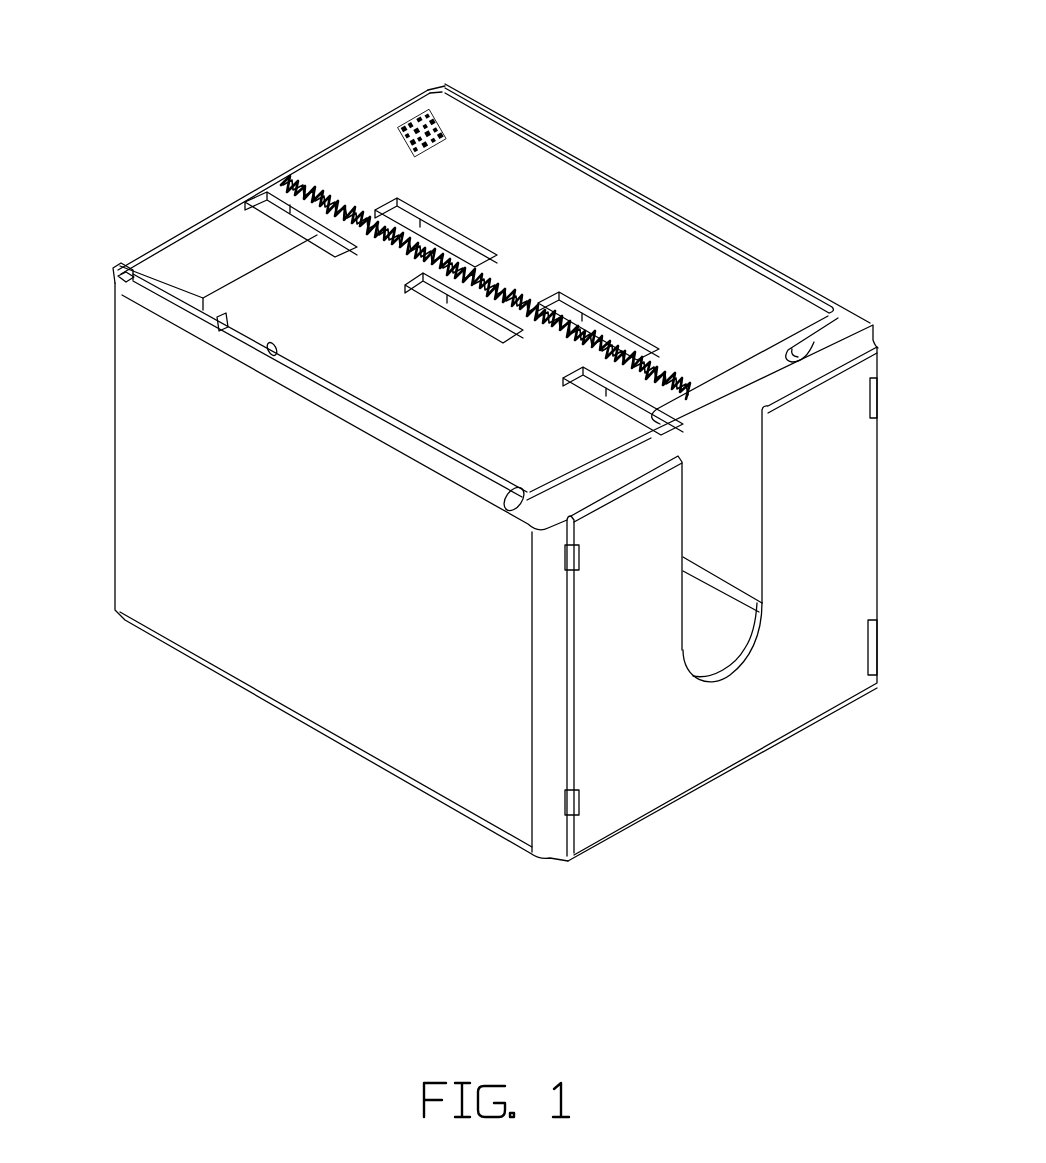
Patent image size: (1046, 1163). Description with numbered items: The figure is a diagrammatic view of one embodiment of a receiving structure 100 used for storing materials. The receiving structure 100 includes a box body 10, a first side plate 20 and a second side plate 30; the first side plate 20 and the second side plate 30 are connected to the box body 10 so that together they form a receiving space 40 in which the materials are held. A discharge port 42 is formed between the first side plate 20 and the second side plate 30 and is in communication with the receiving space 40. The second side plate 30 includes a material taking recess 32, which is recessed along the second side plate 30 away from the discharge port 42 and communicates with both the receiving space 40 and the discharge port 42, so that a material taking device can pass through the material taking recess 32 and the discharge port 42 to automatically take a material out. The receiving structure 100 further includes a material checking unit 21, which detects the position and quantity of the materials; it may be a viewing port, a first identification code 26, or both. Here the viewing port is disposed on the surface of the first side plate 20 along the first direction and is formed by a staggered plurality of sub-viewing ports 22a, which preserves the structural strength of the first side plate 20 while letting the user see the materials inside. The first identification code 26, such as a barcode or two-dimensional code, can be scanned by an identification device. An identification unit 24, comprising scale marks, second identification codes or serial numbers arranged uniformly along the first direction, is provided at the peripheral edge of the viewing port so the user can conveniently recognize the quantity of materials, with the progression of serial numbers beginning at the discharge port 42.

The receiving structure 100 is at (381, 27).
The box body 10 is at (140, 385).
The first side plate 20 is at (223, 240).
The material checking unit 21 is at (635, 114).
The sub-viewing ports 22a is at (598, 390).
The identification unit 24 is at (672, 388).
The first identification code 26 is at (437, 130).
The second side plate 30 is at (852, 452).
The material taking recess 32 is at (745, 657).
The receiving space 40 is at (722, 496).
The discharge port 42 is at (821, 351).